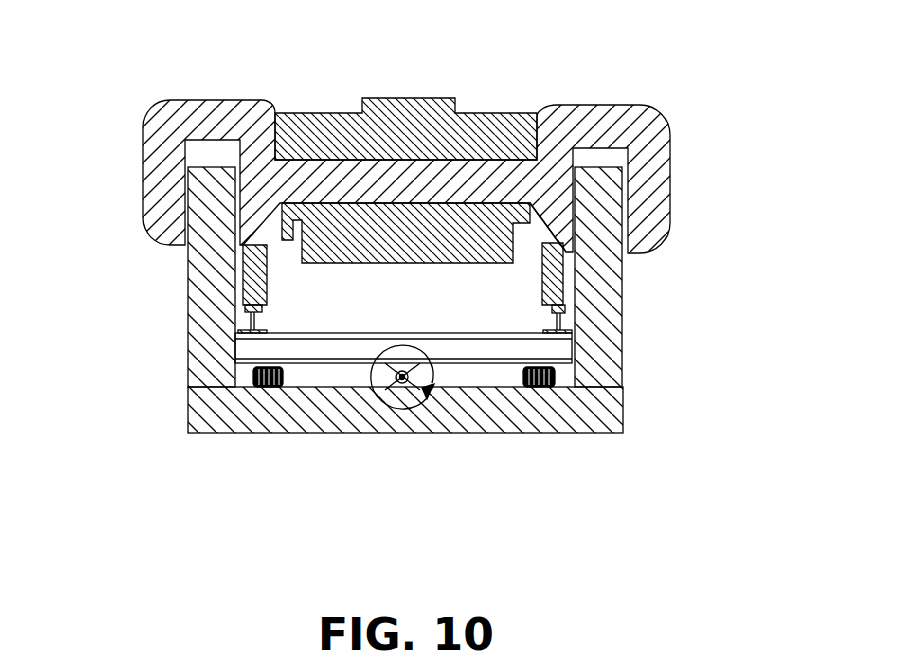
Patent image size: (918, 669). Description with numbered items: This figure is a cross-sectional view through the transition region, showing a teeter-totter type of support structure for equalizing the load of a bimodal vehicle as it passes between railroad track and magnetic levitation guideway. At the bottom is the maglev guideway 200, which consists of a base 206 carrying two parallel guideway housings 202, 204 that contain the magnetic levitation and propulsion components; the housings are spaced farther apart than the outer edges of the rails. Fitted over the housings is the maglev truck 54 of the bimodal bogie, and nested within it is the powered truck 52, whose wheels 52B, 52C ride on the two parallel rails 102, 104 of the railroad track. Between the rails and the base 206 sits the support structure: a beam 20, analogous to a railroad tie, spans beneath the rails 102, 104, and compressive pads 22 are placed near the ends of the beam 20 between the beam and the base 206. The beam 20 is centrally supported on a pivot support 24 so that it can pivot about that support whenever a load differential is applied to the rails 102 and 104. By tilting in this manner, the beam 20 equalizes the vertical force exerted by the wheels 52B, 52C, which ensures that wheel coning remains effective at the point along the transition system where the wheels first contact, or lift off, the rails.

The beam 20 is at (340, 349).
The compressive pad 22 is at (262, 378).
The pivot support 24 is at (404, 384).
The powered truck 52 is at (320, 107).
The wheel 52B is at (253, 273).
The wheel 52C is at (563, 277).
The maglev truck 54 is at (675, 130).
The rail 102 is at (252, 318).
The rail 104 is at (557, 320).
The maglev guideway 200 is at (427, 344).
The guideway housing 202 is at (202, 322).
The guideway housing 204 is at (607, 298).
The base 206 is at (478, 418).